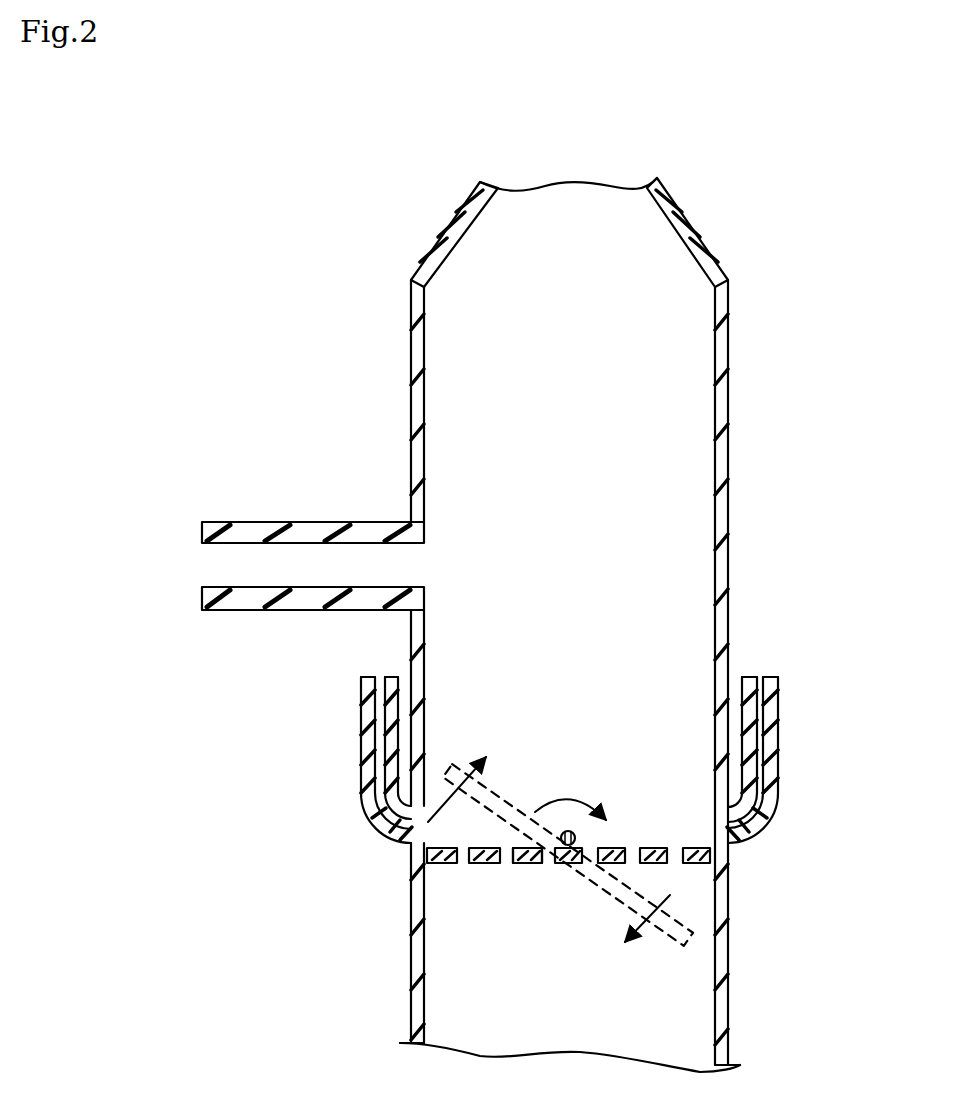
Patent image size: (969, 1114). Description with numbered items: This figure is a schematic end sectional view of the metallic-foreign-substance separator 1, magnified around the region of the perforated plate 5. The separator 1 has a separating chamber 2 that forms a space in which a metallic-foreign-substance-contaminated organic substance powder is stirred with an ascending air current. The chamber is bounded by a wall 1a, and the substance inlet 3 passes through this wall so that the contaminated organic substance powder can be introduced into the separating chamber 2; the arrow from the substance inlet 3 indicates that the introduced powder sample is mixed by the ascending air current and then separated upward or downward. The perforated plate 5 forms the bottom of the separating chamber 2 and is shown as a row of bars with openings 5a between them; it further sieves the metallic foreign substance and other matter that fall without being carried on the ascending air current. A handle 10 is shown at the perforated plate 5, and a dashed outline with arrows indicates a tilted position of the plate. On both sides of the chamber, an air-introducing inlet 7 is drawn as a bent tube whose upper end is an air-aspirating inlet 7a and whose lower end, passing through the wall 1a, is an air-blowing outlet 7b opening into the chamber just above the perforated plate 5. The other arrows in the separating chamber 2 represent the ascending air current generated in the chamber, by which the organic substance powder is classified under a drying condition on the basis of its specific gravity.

The metallic-foreign-substance separator 1 is at (786, 360).
The furnace wall 1a is at (730, 610).
The separating chamber 2 is at (652, 435).
The substance inlet 3 is at (252, 522).
The perforated plate 5 is at (568, 862).
The opening 5a is at (507, 870).
The air-introducing inlet 7 is at (362, 750).
The air-aspirating inlet 7a is at (377, 670).
The air-blowing outlet 7b is at (430, 820).
The handle 10 is at (569, 836).